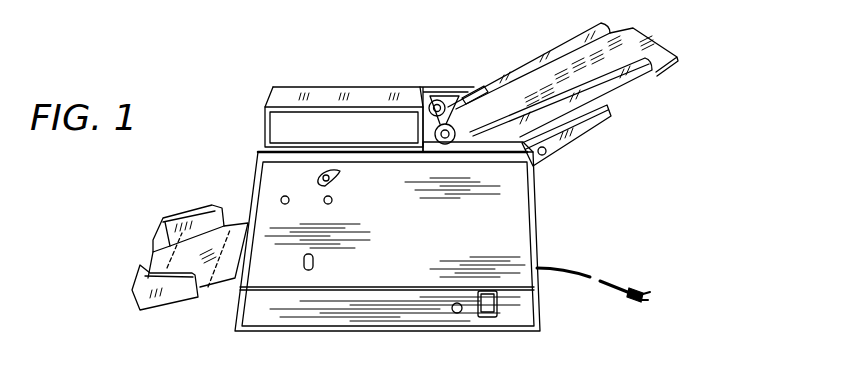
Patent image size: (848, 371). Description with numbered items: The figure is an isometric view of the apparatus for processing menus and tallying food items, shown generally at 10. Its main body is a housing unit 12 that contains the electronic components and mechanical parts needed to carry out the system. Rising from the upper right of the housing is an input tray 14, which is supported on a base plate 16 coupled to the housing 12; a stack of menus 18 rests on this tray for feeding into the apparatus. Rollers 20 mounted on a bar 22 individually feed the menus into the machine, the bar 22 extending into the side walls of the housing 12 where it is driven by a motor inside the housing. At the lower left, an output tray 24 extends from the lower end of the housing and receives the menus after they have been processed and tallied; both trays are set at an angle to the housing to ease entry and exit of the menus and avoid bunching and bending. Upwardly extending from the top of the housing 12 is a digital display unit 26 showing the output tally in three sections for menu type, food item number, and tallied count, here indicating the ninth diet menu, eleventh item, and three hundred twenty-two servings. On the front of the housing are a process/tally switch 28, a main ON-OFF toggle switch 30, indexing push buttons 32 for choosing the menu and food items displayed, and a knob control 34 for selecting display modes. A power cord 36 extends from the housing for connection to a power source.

The apparatus for processing menus and tallying food items 10 is at (318, 74).
The housing unit 12 is at (533, 250).
The input tray 14 is at (632, 78).
The base plate 16 is at (588, 128).
The stack of menus 18 is at (663, 42).
The rollers 20 is at (437, 100).
The bar 22 is at (477, 90).
The output tray 24 is at (196, 212).
The digital display unit 26 is at (265, 105).
The process/tally switch 28 is at (313, 262).
The main ON-OFF toggle switch 30 is at (497, 310).
The indexing push buttons 32 is at (307, 214).
The knob control 34 is at (333, 182).
The power cord 36 is at (632, 290).